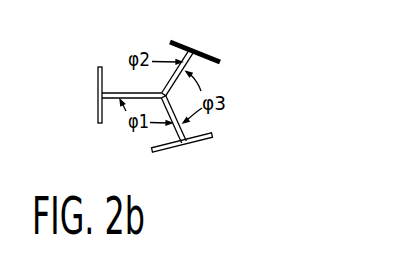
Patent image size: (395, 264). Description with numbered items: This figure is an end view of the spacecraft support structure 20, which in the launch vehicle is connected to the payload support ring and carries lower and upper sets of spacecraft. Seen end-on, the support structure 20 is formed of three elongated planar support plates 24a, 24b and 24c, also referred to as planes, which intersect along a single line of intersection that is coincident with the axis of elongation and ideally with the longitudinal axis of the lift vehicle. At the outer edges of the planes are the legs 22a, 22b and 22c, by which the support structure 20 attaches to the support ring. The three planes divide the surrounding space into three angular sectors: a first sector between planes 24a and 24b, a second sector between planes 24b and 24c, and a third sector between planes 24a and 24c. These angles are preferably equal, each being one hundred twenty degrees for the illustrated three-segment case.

The spacecraft support structure 20 is at (159, 96).
The leg 22a is at (204, 145).
The leg 22b is at (97, 73).
The leg 22c is at (215, 55).
The elongated planar support plate 24a is at (199, 78).
The elongated planar support plate 24b is at (120, 92).
The elongated planar support plate 24c is at (182, 58).